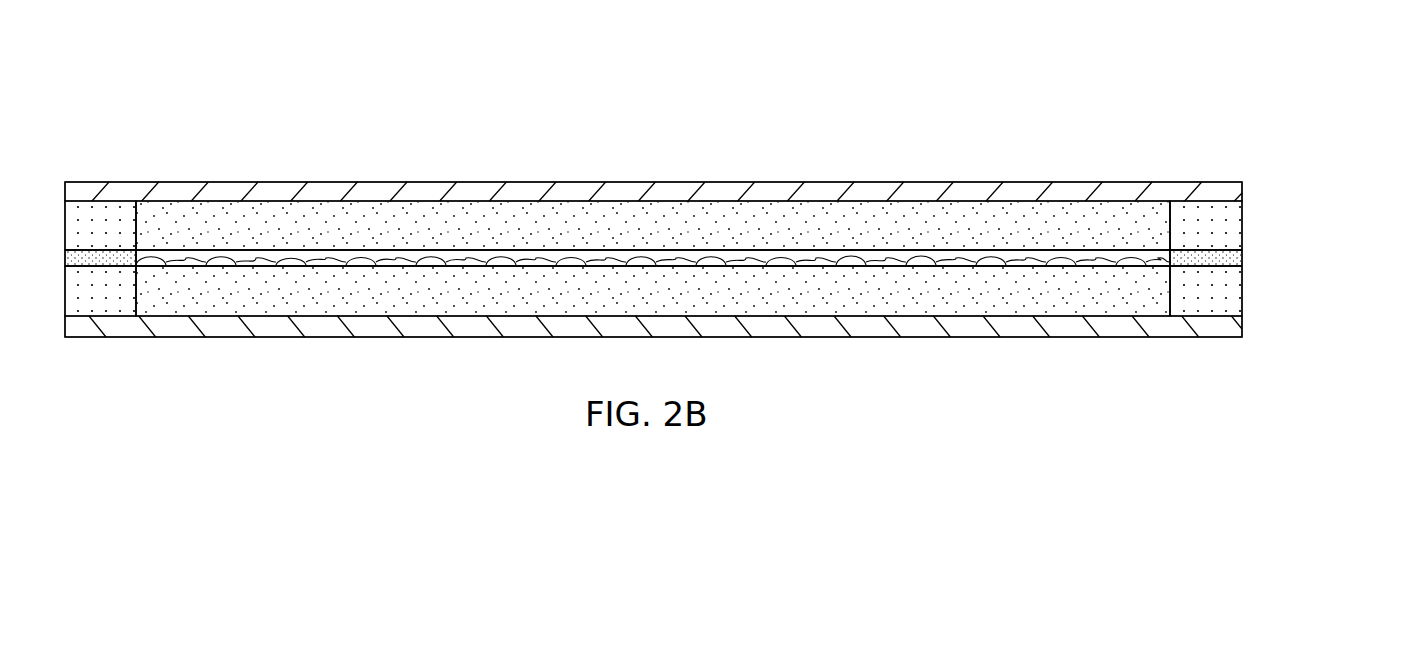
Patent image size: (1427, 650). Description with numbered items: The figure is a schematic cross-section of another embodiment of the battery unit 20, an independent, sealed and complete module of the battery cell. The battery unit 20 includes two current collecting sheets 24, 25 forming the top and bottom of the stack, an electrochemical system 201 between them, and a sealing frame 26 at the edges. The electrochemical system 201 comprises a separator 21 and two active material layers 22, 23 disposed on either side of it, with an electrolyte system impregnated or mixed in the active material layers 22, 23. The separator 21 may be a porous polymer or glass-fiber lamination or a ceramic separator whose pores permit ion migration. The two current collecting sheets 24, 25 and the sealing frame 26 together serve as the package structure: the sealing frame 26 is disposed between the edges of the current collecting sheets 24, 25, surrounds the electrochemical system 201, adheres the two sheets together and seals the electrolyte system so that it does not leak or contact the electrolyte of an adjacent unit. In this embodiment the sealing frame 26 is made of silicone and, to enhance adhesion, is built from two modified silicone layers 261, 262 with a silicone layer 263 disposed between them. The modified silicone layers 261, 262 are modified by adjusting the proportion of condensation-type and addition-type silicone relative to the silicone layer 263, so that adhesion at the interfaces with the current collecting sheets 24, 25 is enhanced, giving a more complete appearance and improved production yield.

The battery unit 20 is at (883, 83).
The electrochemical system 201 is at (653, 363).
The separator 21 is at (152, 263).
The active material layer 22 is at (312, 242).
The active material layer 23 is at (248, 307).
The current collecting sheet 24 is at (1025, 182).
The current collecting sheet 25 is at (825, 338).
The sealing frame 26 is at (737, 258).
The modified silicone layer 261 is at (1243, 213).
The modified silicone layer 262 is at (699, 291).
The silicone layer 263 is at (1243, 258).